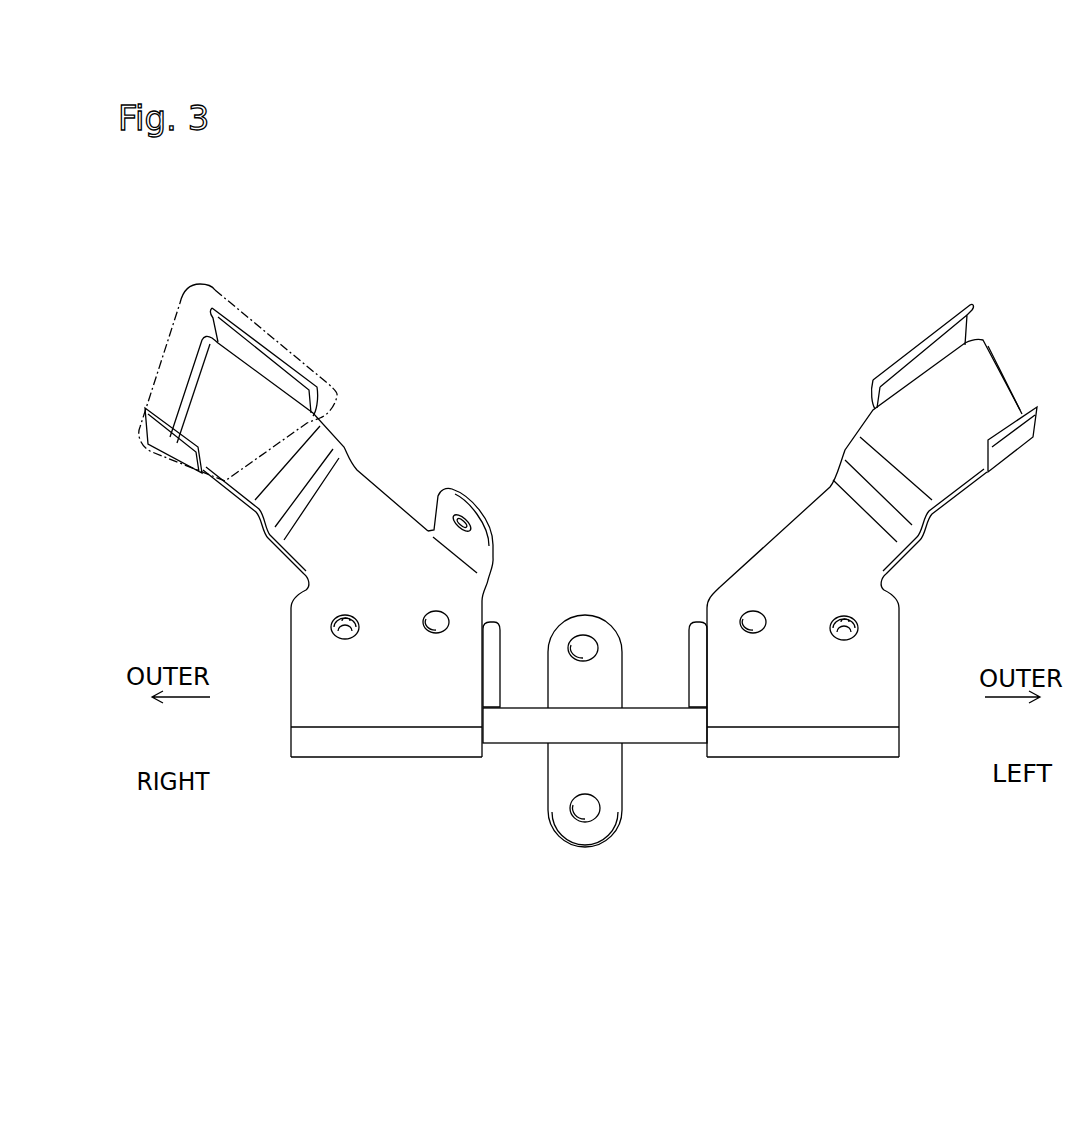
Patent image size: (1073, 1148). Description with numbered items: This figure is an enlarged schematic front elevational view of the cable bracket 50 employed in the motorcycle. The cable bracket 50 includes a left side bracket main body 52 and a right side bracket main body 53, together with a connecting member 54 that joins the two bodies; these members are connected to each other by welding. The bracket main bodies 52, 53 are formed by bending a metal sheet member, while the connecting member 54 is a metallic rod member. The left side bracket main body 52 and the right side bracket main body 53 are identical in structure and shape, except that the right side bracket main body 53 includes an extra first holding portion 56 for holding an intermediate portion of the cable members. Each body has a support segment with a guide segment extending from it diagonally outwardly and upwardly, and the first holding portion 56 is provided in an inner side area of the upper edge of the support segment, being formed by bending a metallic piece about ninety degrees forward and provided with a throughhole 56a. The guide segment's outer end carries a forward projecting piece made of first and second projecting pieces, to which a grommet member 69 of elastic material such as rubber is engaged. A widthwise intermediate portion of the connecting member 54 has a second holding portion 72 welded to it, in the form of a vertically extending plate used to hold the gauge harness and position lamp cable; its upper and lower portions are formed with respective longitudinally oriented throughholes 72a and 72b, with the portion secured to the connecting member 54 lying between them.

The cable bracket 50 is at (978, 591).
The left side bracket main body 52 is at (773, 517).
The right side bracket main body 53 is at (386, 490).
The connecting member 54 is at (668, 750).
The first holding portion 56 is at (443, 488).
The throughhole 56a is at (488, 546).
The grommet member 69 is at (323, 377).
The second holding portion 72 is at (558, 770).
The throughhole 72a is at (600, 641).
The throughhole 72b is at (578, 822).